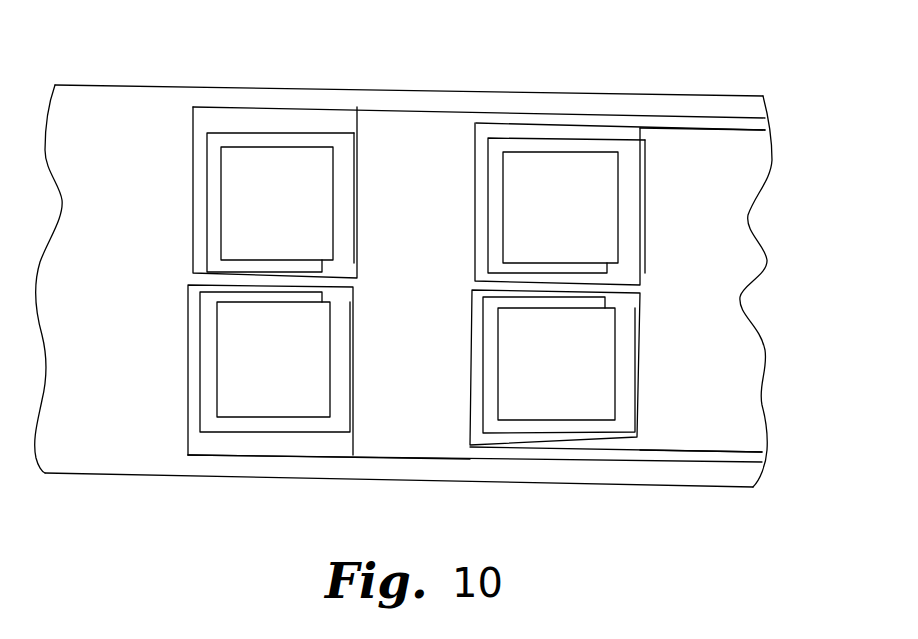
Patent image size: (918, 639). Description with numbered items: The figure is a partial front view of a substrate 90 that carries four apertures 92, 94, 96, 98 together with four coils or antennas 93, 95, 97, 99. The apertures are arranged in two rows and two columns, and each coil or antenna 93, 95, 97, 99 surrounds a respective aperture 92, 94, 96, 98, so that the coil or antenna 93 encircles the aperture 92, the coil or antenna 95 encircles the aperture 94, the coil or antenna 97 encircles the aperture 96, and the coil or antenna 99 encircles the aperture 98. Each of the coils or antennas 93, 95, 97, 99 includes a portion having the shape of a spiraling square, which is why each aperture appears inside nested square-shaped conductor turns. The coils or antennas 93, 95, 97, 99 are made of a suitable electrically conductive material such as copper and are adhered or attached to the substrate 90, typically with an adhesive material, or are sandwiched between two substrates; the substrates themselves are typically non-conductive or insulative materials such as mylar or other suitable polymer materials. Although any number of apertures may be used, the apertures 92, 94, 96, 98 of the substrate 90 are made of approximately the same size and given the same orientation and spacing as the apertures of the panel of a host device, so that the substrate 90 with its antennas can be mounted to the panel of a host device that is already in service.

The substrate 90 is at (112, 86).
The coil or antenna 93 is at (293, 108).
The aperture 92 is at (222, 210).
The aperture 96 is at (503, 210).
The aperture 94 is at (217, 370).
The aperture 98 is at (498, 360).
The coil or antenna 95 is at (268, 455).
The coil or antenna 97 is at (685, 130).
The coil or antenna 99 is at (748, 452).